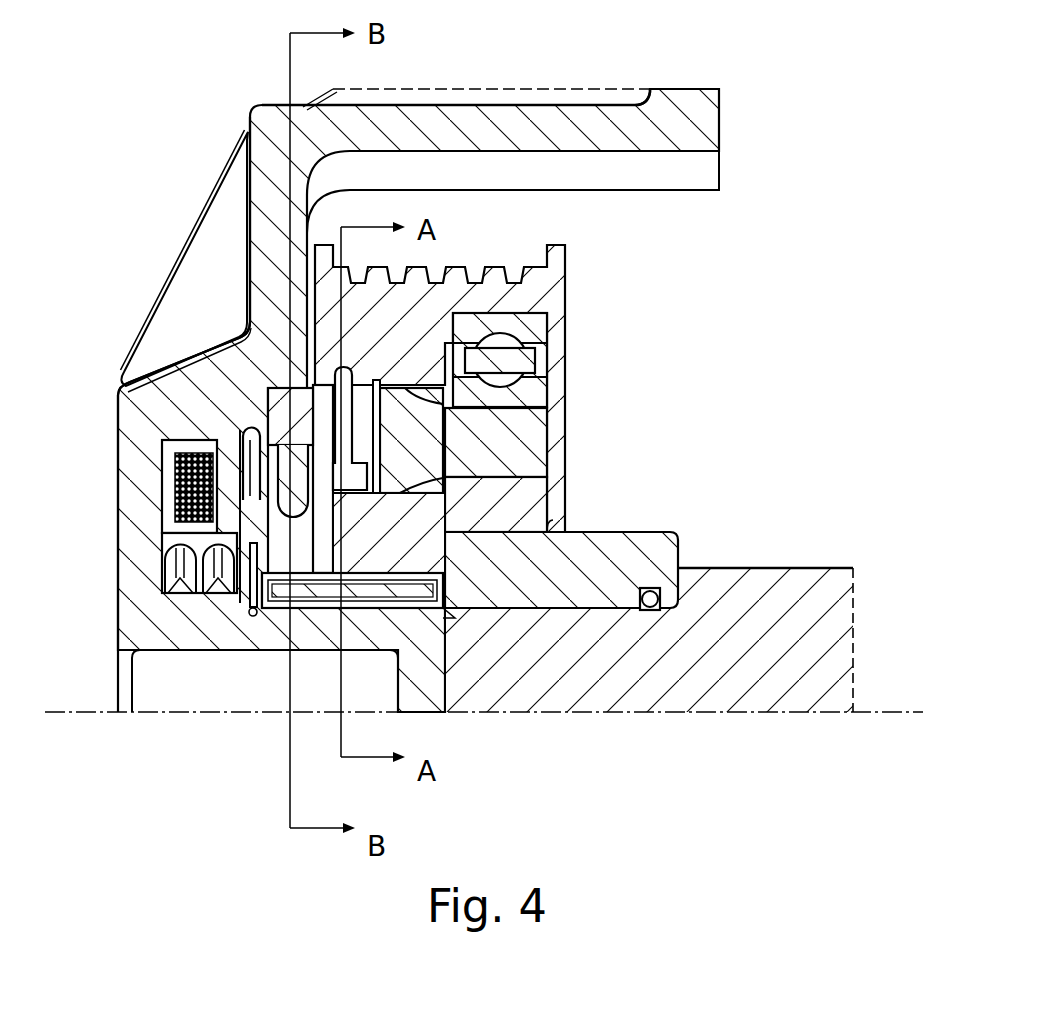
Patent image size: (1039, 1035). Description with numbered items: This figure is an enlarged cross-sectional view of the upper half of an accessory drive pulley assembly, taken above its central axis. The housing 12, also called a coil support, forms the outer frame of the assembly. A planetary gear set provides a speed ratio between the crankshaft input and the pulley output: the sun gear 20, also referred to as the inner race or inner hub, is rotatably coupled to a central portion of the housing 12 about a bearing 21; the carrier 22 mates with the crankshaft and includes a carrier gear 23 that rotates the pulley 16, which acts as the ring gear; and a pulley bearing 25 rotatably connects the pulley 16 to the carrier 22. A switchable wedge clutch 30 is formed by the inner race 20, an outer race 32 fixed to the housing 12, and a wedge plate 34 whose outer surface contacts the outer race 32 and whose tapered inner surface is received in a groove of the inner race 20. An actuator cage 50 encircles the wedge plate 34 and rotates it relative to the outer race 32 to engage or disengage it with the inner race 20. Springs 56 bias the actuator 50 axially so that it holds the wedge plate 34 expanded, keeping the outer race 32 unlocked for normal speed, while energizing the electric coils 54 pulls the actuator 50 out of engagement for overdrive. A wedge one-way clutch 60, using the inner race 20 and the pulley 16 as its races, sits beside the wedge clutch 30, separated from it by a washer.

The housing 12 is at (697, 127).
The pulley 16 is at (468, 290).
The sun gear 20 is at (331, 540).
The bearing 21 is at (292, 600).
The carrier 22 is at (540, 428).
The carrier gear 23 is at (415, 452).
The pulley bearing 25 is at (533, 331).
The switchable wedge clutch 30 is at (278, 525).
The outer race 32 is at (283, 400).
The wedge plate 34 is at (253, 421).
The actuator cage 50 is at (167, 444).
The electric coils 54 is at (168, 487).
The springs 56 is at (168, 570).
The wedge one-way clutch 60 is at (350, 485).